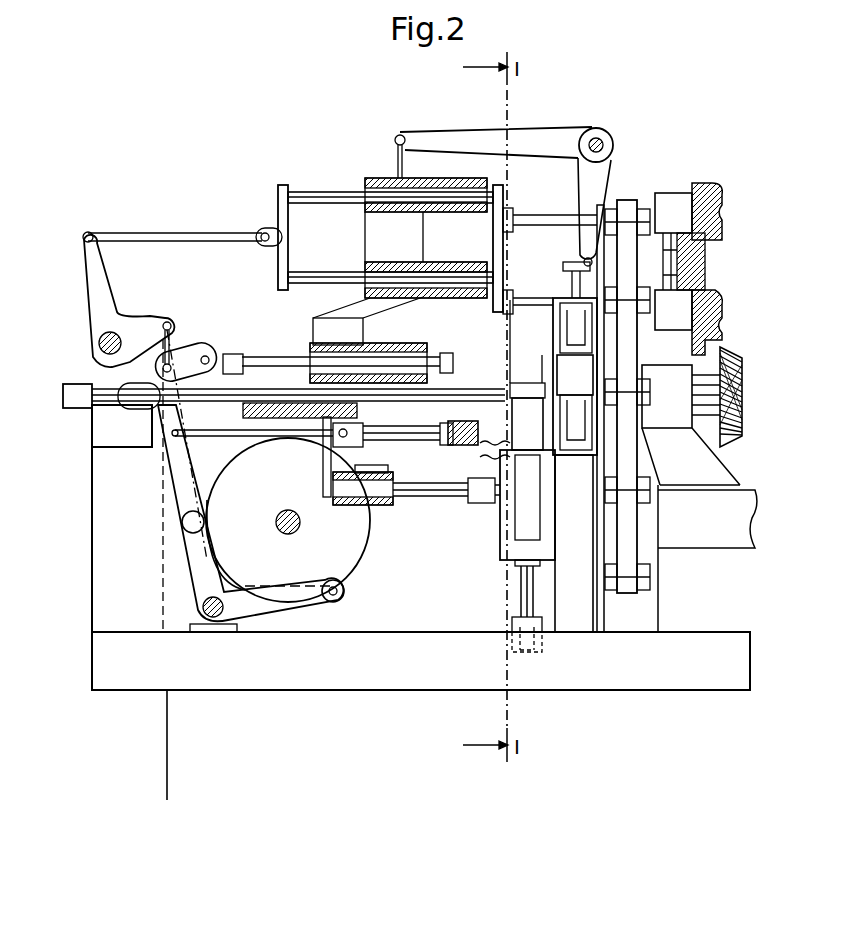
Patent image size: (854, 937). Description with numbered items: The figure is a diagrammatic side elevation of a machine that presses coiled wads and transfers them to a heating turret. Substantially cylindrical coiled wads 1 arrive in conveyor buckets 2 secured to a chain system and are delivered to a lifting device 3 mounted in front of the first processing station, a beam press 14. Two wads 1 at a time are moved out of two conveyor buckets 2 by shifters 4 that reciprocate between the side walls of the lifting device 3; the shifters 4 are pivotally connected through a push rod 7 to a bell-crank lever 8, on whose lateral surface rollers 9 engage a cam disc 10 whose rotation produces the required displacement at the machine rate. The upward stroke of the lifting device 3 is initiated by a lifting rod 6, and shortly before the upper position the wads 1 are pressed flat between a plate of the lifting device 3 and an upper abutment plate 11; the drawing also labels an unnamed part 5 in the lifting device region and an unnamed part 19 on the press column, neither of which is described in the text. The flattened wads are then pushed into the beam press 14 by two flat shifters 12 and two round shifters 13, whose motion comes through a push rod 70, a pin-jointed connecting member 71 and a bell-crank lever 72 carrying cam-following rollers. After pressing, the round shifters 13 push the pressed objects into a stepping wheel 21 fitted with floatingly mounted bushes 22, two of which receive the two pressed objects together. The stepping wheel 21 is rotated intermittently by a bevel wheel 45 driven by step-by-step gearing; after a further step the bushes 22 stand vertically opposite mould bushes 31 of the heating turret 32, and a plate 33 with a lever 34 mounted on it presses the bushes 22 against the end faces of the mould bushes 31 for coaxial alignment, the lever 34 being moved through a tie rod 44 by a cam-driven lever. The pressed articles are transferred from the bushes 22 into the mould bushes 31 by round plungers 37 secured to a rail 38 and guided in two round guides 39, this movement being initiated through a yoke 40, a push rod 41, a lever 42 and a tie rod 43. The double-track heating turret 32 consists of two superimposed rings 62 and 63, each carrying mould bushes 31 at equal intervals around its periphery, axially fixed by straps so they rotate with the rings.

The coiled wads 1 is at (421, 473).
The conveyor buckets 2 is at (456, 421).
The lifting device 3 is at (505, 497).
The shifters 4 is at (398, 430).
The slide block 5 is at (536, 434).
The lifting rod 6 is at (520, 597).
The push rod 7 is at (236, 440).
The bell-crank lever 8 is at (180, 507).
The rollers 9 is at (184, 535).
The cam disc 10 is at (357, 542).
The upper abutment plate 11 is at (524, 383).
The flat shifters 12 is at (480, 389).
The round shifters 13 is at (284, 396).
The beam press 14 is at (553, 328).
The slide 19 is at (588, 384).
The stepping wheel 21 is at (633, 205).
The bushes 22 is at (652, 576).
The mould bushes 31 is at (652, 210).
The heating turret 32 is at (694, 190).
The plate 33 is at (600, 213).
The lever 34 is at (445, 132).
The round plungers 37 is at (535, 216).
The rail 38 is at (496, 244).
The round guides 39 is at (375, 180).
The yoke 40 is at (280, 200).
The push rod 41 is at (122, 233).
The lever 42 is at (108, 286).
The tie rod 43 is at (170, 753).
The tie rod 44 is at (398, 152).
The bevel wheel 45 is at (740, 358).
The ring 62 is at (687, 226).
The ring 63 is at (687, 323).
The push rod 70 is at (258, 355).
The pin-jointed connecting member 71 is at (201, 355).
The bell-crank lever 72 is at (194, 405).